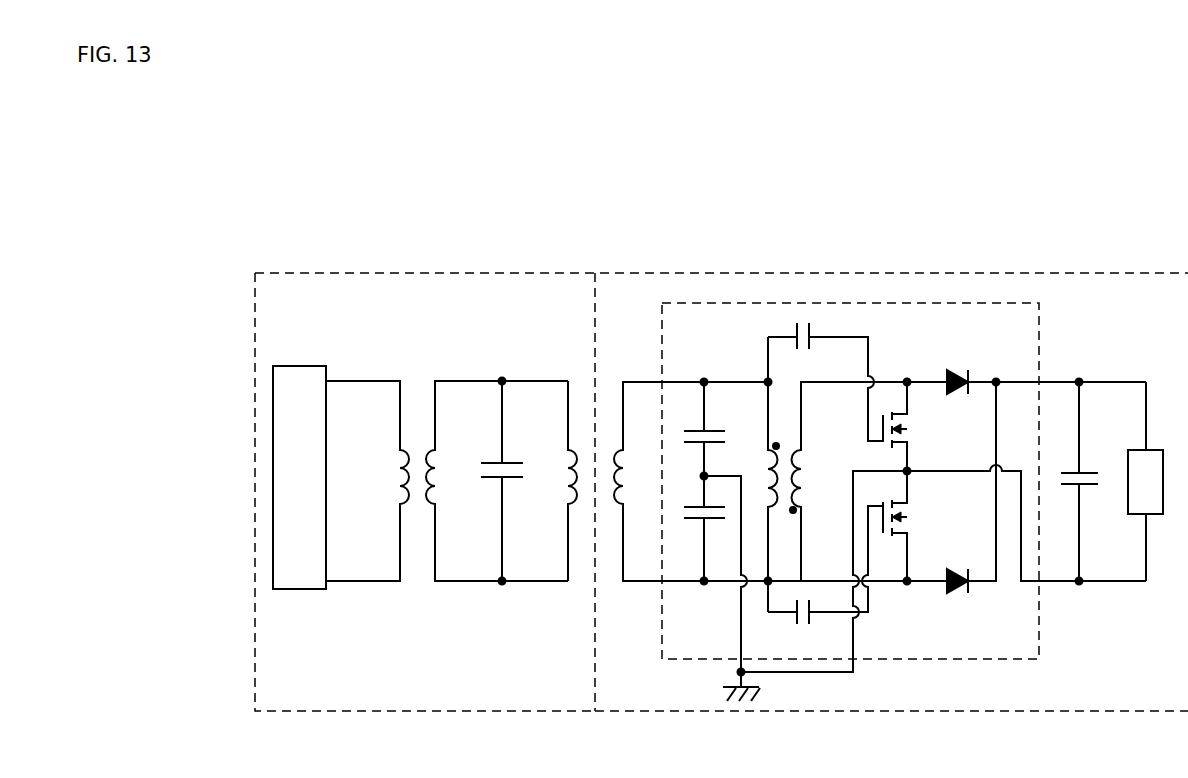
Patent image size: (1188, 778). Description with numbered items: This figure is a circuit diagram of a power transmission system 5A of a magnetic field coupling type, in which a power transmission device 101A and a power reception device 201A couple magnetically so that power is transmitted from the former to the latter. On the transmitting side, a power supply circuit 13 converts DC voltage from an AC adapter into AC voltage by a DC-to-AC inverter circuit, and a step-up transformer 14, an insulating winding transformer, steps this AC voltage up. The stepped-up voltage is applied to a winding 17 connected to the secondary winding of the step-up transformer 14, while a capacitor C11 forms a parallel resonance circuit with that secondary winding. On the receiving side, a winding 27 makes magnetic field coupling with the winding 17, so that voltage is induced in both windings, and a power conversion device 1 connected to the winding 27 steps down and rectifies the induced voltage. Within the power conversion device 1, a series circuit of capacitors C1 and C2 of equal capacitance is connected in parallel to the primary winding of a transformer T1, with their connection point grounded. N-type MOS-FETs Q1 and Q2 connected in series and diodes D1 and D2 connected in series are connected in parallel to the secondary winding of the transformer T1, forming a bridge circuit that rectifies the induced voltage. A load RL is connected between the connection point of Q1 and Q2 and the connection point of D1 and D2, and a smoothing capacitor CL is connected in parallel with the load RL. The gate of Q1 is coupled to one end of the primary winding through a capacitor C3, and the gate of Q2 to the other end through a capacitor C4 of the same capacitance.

The power transmission system 5A is at (284, 208).
The power transmission device 101A is at (296, 272).
The power reception device 201A is at (1160, 257).
The power conversion device 1 is at (1014, 302).
The power supply circuit 13 is at (306, 364).
The step-up transformer 14 is at (415, 367).
The winding 17 is at (558, 481).
The winding 27 is at (805, 481).
The capacitor C11 is at (512, 481).
The capacitor C1 is at (701, 429).
The capacitor C2 is at (701, 530).
The capacitor C3 is at (825, 382).
The capacitor C4 is at (825, 577).
The transformer T1 is at (836, 474).
The N-type MOS-FET Q1 is at (892, 427).
The N-type MOS-FET Q2 is at (910, 528).
The diode D1 is at (1026, 398).
The diode D2 is at (951, 487).
The smoothing capacitor CL is at (1075, 482).
The load RL is at (1150, 450).